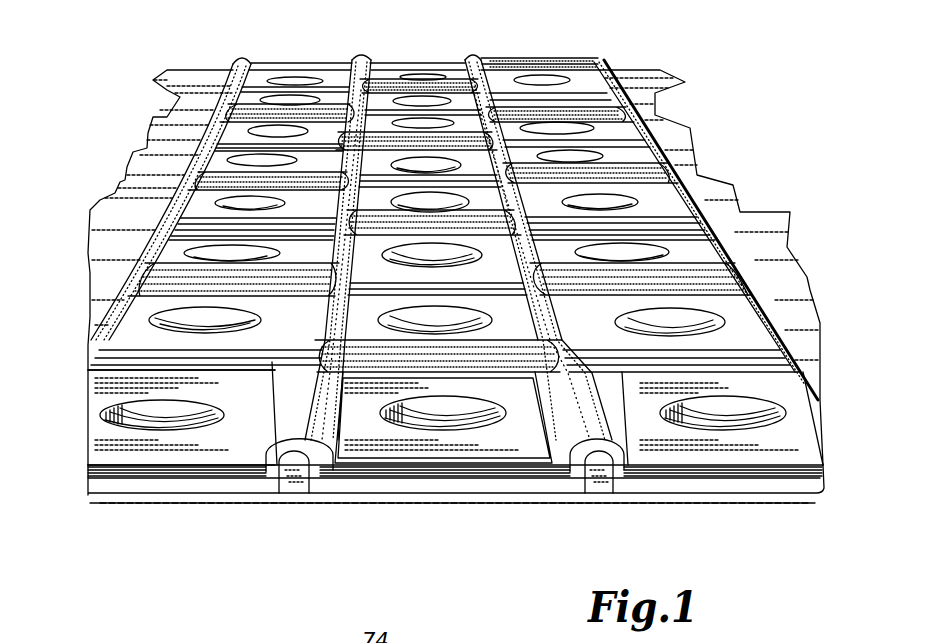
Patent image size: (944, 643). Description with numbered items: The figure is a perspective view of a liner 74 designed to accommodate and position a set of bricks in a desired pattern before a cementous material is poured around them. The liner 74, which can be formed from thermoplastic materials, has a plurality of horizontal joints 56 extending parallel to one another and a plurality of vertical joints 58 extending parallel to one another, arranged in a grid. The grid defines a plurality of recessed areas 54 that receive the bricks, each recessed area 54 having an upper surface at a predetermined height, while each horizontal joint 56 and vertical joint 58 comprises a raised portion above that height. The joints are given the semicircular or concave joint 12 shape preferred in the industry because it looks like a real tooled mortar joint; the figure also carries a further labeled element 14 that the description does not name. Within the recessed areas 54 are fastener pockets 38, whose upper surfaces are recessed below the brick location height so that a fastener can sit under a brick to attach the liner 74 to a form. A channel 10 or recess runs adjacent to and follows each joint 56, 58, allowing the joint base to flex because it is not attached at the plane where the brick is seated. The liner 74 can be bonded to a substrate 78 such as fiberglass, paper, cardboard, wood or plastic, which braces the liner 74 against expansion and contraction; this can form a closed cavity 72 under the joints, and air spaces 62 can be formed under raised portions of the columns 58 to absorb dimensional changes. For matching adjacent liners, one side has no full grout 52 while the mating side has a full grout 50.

The channel 10 is at (573, 478).
The concave joint 12 is at (320, 473).
The tile 14 is at (640, 225).
The fastener pocket 38 is at (755, 417).
The full grout 50 is at (570, 62).
The no full grout 52 is at (800, 482).
The recessed area 54 is at (727, 305).
The horizontal joint 56 is at (297, 385).
The vertical joint 58 is at (190, 277).
The air space 62 is at (288, 470).
The closed cavity 72 is at (310, 490).
The liner 74 is at (430, 56).
The substrate 78 is at (747, 497).